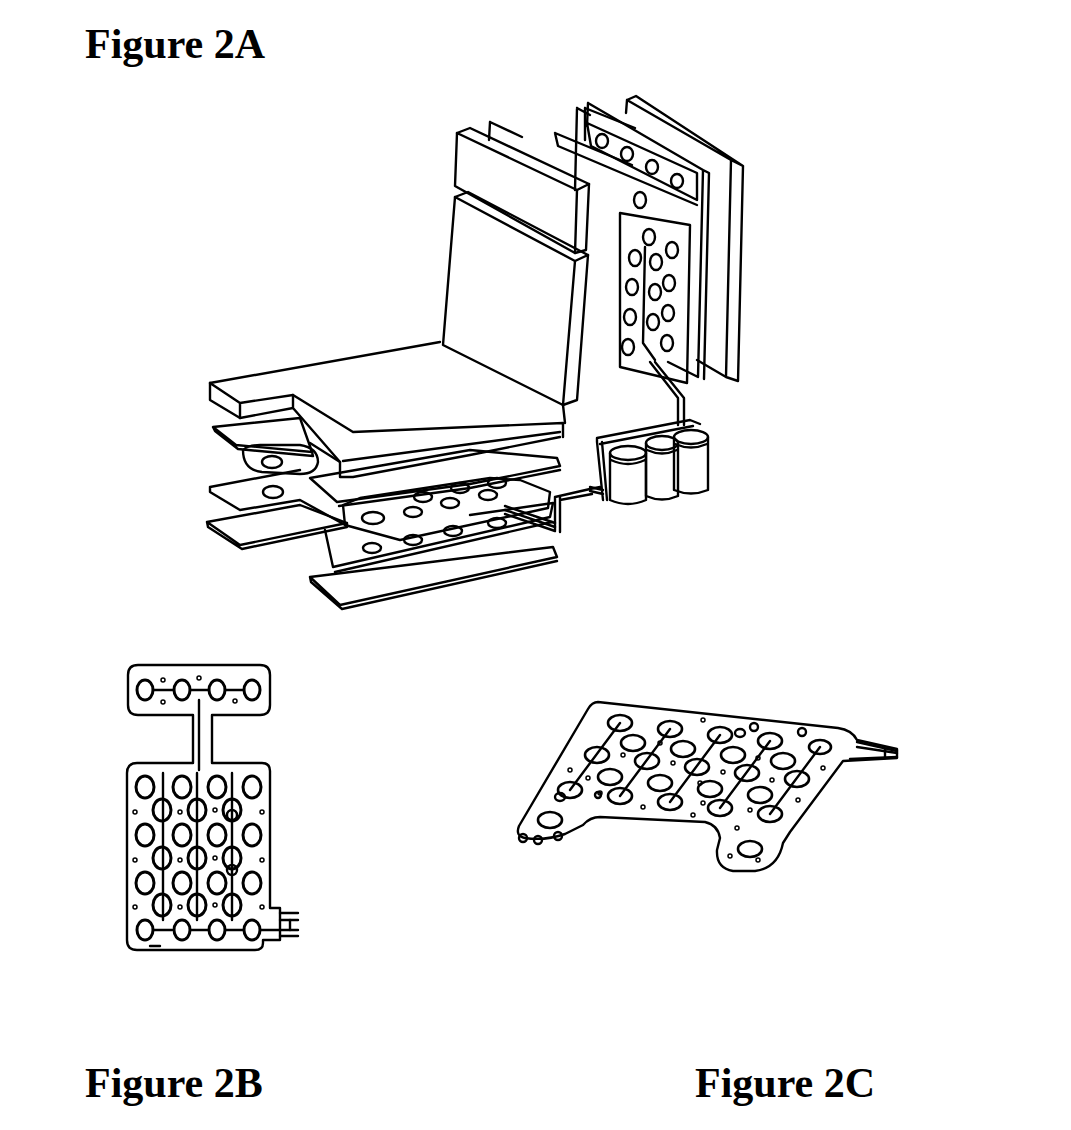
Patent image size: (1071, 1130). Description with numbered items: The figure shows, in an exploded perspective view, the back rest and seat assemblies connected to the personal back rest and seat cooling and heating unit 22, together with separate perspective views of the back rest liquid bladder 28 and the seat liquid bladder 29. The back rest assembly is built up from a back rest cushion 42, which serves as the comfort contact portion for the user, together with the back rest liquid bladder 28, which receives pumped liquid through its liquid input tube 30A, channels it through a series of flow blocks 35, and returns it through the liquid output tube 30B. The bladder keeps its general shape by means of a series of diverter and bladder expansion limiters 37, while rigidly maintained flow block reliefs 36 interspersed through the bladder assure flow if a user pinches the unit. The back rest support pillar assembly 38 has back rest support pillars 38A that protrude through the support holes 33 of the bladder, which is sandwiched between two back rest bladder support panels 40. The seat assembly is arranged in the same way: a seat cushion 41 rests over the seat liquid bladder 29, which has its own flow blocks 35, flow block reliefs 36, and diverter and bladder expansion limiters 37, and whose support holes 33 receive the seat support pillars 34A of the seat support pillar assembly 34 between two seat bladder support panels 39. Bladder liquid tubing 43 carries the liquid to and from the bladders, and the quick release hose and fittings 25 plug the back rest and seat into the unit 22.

In FIG. 2A, the personal back rest and seat cooling and heating unit 22 is at (712, 467).
In FIG. 2B, the quick release hose and fittings 25 is at (300, 917).
In FIG. 2C, the quick release hose and fittings 25 is at (884, 754).
In FIG. 2A, the back rest liquid bladder 28 is at (625, 168).
In FIG. 2B, the back rest liquid bladder 28 is at (275, 794).
In FIG. 2A, the seat liquid bladder 29 is at (243, 462).
In FIG. 2C, the seat liquid bladder 29 is at (643, 822).
In FIG. 2B, the liquid input tube 30A is at (287, 908).
In FIG. 2C, the liquid input tube 30A is at (848, 766).
In FIG. 2B, the liquid output tube 30B is at (283, 945).
In FIG. 2C, the liquid output tube 30B is at (855, 742).
In FIG. 2B, the support hole 33 is at (148, 857).
In FIG. 2C, the support hole 33 is at (704, 733).
In FIG. 2A, the seat support pillar assembly 34 is at (207, 495).
In FIG. 2A, the seat support pillar 34A is at (496, 530).
In FIG. 2B, the flow block 35 is at (240, 868).
In FIG. 2C, the flow block 35 is at (739, 727).
In FIG. 2B, the flow block relief 36 is at (161, 944).
In FIG. 2C, the flow block relief 36 is at (607, 742).
In FIG. 2B, the diverter and bladder expansion limiter 37 is at (237, 665).
In FIG. 2C, the diverter and bladder expansion limiter 37 is at (802, 726).
In FIG. 2A, the back rest support pillar assembly 38 is at (581, 120).
In FIG. 2A, the back rest support pillar 38A is at (670, 345).
In FIG. 2A, the seat bladder support panel 39 is at (203, 430).
In FIG. 2A, the back rest bladder support panel 40 is at (506, 128).
In FIG. 2A, the seat cushion 41 is at (353, 382).
In FIG. 2A, the back rest cushion 42 is at (482, 273).
In FIG. 2A, the bladder liquid tubing 43 is at (674, 405).